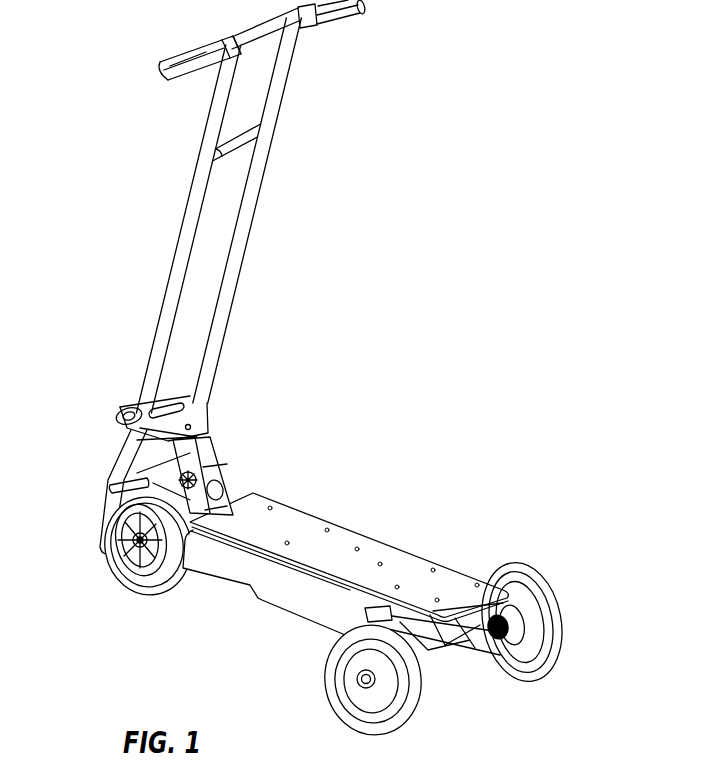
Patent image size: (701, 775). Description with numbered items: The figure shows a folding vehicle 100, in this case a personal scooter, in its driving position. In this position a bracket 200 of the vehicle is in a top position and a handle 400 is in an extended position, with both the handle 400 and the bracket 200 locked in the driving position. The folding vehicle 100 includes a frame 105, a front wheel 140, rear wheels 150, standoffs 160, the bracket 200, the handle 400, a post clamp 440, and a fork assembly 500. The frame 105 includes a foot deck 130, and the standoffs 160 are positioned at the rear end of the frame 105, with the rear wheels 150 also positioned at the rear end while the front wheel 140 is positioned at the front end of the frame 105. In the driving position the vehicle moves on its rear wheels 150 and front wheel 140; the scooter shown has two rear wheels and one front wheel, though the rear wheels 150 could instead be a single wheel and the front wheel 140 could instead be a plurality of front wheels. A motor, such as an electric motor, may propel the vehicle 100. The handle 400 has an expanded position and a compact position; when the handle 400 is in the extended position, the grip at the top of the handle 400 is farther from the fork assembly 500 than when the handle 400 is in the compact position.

The folding vehicle 100 is at (523, 122).
The frame 105 is at (287, 594).
The foot deck 130 is at (352, 548).
The front wheel 140 is at (148, 588).
The rear wheels 150 is at (330, 665).
The standoffs 160 is at (486, 617).
The bracket 200 is at (212, 449).
The handle 400 is at (244, 216).
The post clamp 440 is at (122, 424).
The fork assembly 500 is at (206, 418).